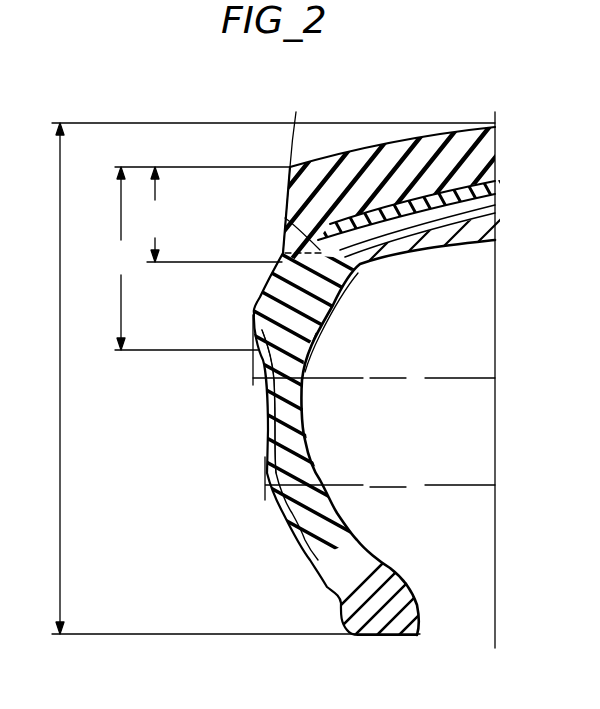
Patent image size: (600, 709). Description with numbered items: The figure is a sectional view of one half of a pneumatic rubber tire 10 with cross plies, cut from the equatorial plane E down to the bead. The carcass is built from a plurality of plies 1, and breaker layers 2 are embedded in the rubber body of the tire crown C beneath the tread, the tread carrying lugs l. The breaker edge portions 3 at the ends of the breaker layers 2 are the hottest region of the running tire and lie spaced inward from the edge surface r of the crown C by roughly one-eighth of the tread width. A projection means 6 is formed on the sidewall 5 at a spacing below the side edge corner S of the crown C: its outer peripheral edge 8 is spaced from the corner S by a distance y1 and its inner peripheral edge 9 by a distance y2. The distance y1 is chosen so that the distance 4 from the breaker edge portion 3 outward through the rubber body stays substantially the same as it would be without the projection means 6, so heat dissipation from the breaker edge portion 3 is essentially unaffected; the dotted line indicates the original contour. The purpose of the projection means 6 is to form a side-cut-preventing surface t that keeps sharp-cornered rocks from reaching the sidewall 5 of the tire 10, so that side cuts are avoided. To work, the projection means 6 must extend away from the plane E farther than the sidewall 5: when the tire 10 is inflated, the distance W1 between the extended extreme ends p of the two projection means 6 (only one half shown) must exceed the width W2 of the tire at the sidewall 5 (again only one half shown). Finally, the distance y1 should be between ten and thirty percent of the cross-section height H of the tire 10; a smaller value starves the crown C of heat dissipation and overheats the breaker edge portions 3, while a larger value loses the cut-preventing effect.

The tire 10 is at (286, 160).
The plies 1 is at (348, 274).
The breaker layers 2 is at (466, 184).
The breaker edge portion 3 is at (290, 217).
The distance 4 is at (282, 250).
The sidewall 5 is at (267, 394).
The projection means 6 is at (258, 312).
The outer peripheral edge 8 is at (327, 308).
The inner peripheral edge 9 is at (306, 343).
The tire crown C is at (400, 152).
The side edge corner S is at (295, 126).
The equatorial plane E is at (495, 380).
The lugs l is at (492, 207).
The edge surface of the crown r is at (285, 218).
The side-cut-preventing surface t is at (268, 292).
The extended extreme end p is at (253, 318).
The cross-section height H is at (270, 378).
The distance y1 is at (202, 214).
The distance y2 is at (180, 258).
The distance W1 is at (374, 379).
The width W2 is at (380, 486).